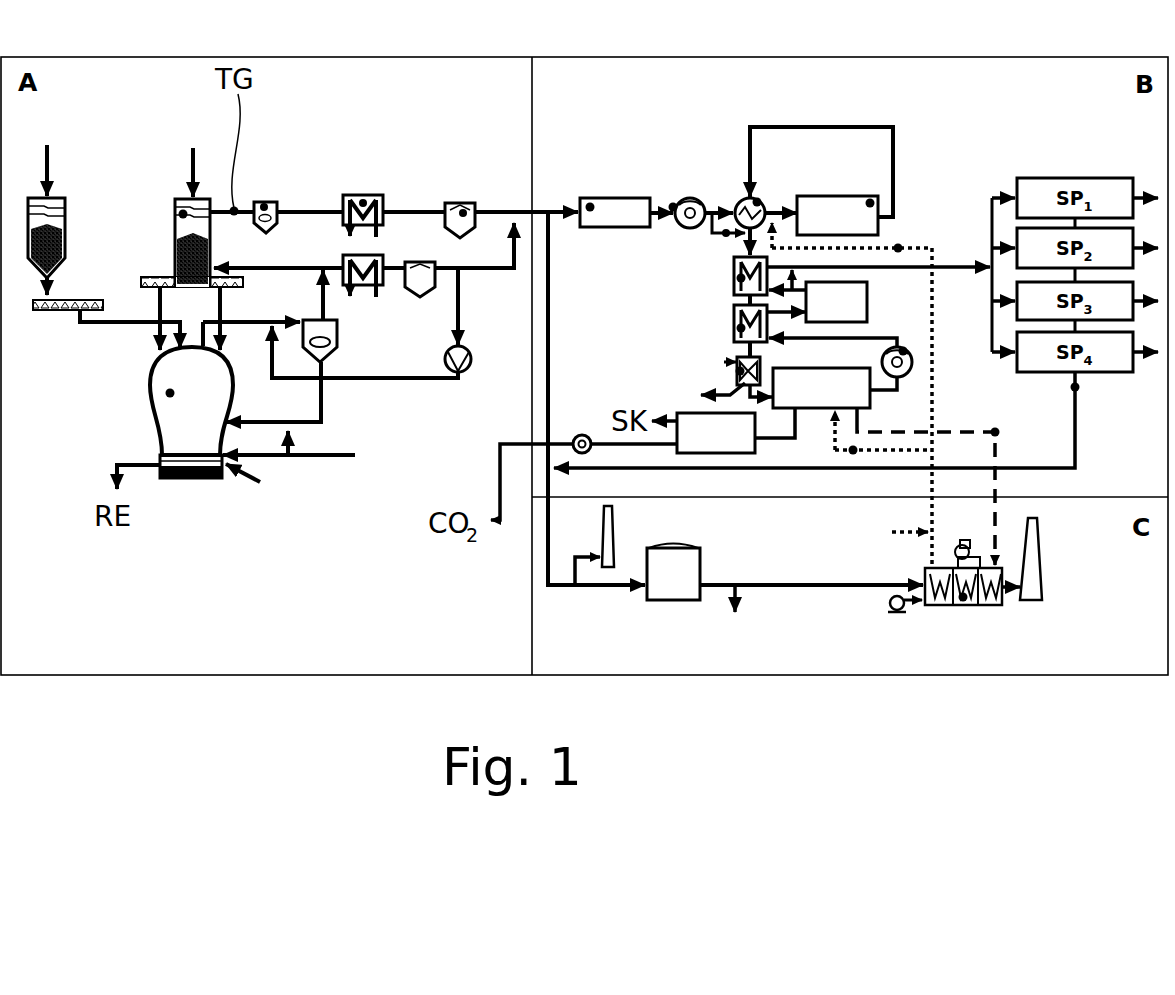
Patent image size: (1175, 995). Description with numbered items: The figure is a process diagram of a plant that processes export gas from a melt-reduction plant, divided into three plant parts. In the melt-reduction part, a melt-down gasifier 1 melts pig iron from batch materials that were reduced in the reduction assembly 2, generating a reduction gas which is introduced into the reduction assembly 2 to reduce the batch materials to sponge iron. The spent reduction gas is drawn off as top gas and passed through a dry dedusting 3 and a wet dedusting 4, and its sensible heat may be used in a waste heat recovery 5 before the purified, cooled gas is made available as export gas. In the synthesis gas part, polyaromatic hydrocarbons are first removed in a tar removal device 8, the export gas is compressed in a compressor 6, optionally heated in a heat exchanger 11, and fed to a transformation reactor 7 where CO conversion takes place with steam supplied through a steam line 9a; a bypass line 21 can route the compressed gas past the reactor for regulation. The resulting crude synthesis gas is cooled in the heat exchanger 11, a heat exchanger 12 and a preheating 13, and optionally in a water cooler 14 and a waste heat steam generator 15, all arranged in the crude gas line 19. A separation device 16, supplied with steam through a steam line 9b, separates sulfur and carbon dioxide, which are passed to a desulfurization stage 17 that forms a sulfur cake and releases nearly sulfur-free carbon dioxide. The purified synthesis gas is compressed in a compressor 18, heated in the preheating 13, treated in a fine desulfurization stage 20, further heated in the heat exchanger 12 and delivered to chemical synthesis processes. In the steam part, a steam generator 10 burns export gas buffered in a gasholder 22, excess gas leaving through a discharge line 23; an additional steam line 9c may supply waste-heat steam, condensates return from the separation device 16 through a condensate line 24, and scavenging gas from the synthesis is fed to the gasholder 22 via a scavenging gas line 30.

The melt-down gasifier 1 is at (168, 393).
The reduction assembly 2 is at (183, 212).
The dry dedusting 3 is at (265, 204).
The wet dedusting 4 is at (463, 209).
The waste heat recovery 5 is at (363, 201).
The compressor 6 is at (673, 204).
The transformation reactor 7 is at (870, 201).
The tar removal device 8 is at (590, 204).
The steam line 9a is at (899, 246).
The steam line 9b is at (852, 452).
The additional steam line 9c is at (891, 531).
The steam generator 10 is at (962, 599).
The heat exchanger 11 is at (759, 201).
The heat exchanger 12 is at (740, 278).
The preheating 13 is at (740, 328).
The water cooler 14 is at (739, 371).
The waste heat steam generator 15 is at (742, 350).
The separation device 16 is at (821, 388).
The desulfurization stage 17 is at (716, 433).
The compressor 18 is at (904, 351).
The crude gas line 19 is at (744, 297).
The fine desulfurization stage 20 is at (836, 302).
The bypass line 21 is at (726, 230).
The gasholder 22 is at (673, 572).
The discharge line 23 is at (737, 619).
The condensate line 24 is at (994, 430).
The scavenging gas line 30 is at (1076, 390).